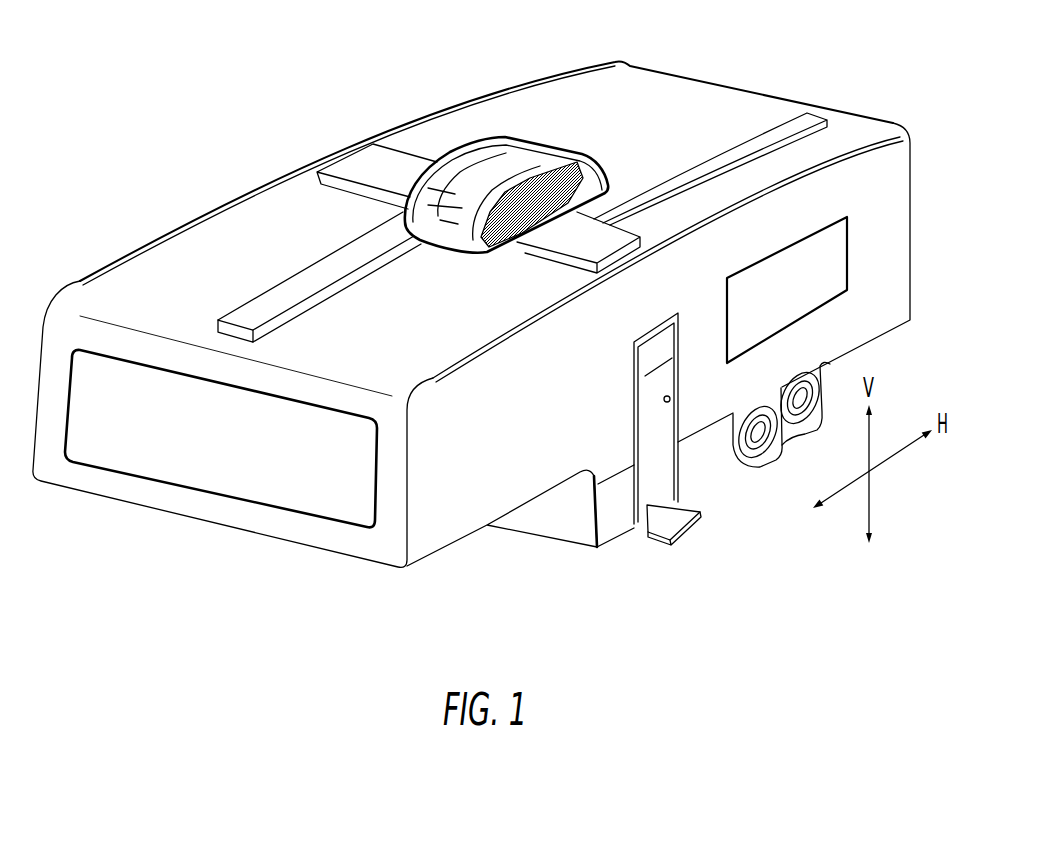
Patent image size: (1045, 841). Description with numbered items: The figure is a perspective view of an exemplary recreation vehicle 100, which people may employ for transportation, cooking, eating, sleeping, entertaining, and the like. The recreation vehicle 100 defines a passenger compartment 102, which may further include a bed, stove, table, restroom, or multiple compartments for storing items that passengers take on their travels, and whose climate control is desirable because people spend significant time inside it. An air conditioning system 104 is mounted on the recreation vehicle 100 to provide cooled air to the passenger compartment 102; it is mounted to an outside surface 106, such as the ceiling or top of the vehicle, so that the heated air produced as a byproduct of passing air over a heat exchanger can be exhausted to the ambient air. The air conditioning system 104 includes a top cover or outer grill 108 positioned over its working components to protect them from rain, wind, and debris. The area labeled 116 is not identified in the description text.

The recreation vehicle 100 is at (226, 88).
The passenger compartment 102 is at (638, 122).
The air conditioning system 104 is at (532, 162).
The outside surface 106 is at (772, 115).
The top cover or outer grill 108 is at (504, 136).
The roof 116 is at (354, 91).